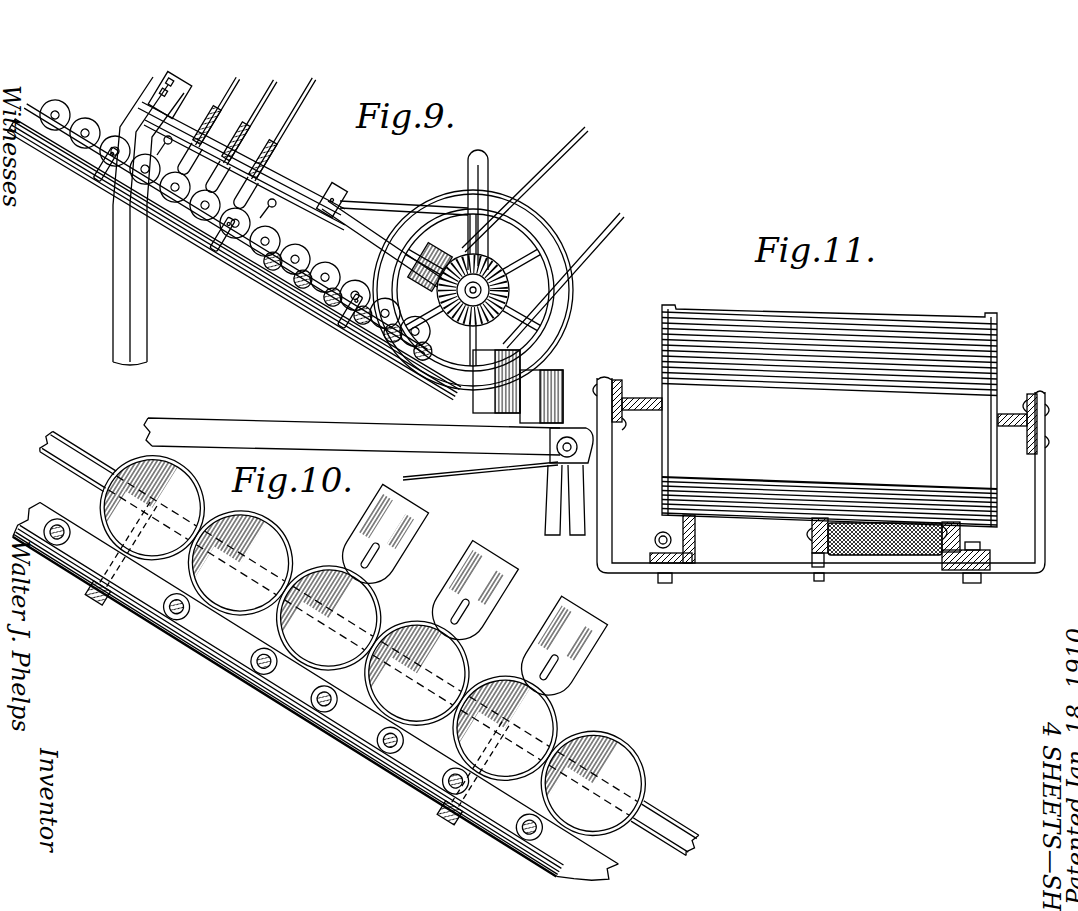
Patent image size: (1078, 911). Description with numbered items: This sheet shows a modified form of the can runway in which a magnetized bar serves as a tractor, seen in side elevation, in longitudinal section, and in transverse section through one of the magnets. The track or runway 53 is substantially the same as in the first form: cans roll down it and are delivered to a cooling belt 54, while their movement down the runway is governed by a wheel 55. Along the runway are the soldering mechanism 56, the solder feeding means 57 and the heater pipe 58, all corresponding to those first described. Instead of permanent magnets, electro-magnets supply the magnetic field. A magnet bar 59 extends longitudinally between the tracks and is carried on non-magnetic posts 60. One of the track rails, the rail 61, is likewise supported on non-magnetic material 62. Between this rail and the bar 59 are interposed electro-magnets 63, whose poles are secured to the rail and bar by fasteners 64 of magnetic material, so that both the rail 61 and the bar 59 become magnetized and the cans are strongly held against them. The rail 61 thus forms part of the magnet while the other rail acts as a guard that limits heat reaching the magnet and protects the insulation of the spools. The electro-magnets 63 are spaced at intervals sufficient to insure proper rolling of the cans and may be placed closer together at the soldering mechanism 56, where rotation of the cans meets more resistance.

In FIG. 9, the track or runway 53 is at (84, 156).
In FIG. 10, the track or runway 53 is at (226, 678).
In FIG. 11, the track or runway 53 is at (697, 548).
In FIG. 9, the cooling belt 54 is at (368, 464).
In FIG. 9, the wheel 55 is at (560, 317).
In FIG. 9, the soldering mechanism 56 is at (270, 210).
In FIG. 10, the soldering mechanism 56 is at (469, 594).
In FIG. 9, the solder feeding means 57 is at (279, 156).
In FIG. 11, the heater pipe 58 is at (655, 541).
In FIG. 9, the magnet bar 59 is at (387, 362).
In FIG. 10, the magnet bar 59 is at (314, 700).
In FIG. 11, the magnet bar 59 is at (812, 548).
In FIG. 10, the non-magnetic posts 60 is at (104, 612).
In FIG. 11, the non-magnetic posts 60 is at (812, 557).
In FIG. 9, the track rail 61 is at (240, 250).
In FIG. 11, the track rail 61 is at (988, 548).
In FIG. 9, the non-magnetic material 62 is at (196, 230).
In FIG. 11, the non-magnetic material 62 is at (957, 570).
In FIG. 9, the electro-magnets 63 is at (368, 354).
In FIG. 10, the electro-magnets 63 is at (166, 600).
In FIG. 11, the electro-magnets 63 is at (893, 555).
In FIG. 11, the fasteners 64 is at (968, 525).